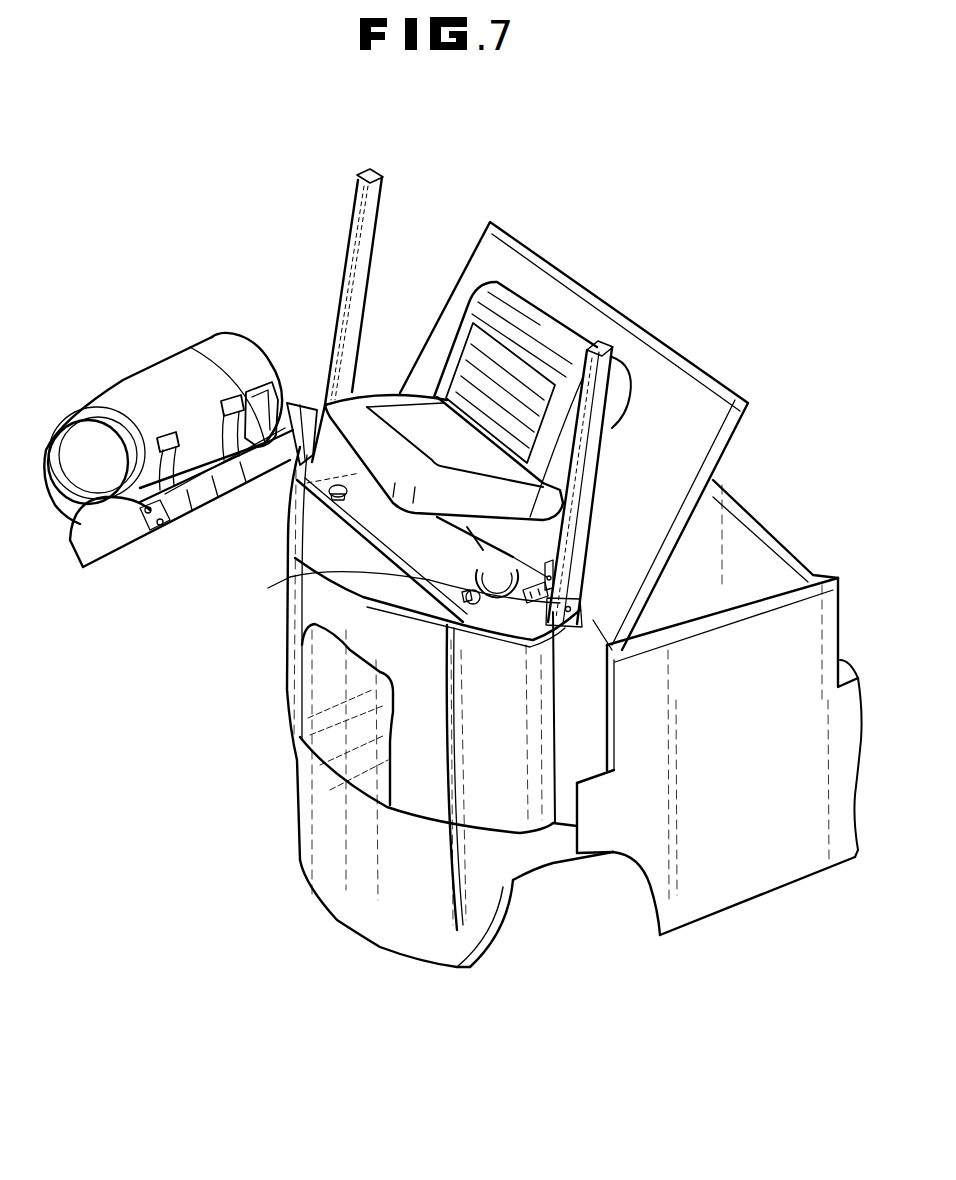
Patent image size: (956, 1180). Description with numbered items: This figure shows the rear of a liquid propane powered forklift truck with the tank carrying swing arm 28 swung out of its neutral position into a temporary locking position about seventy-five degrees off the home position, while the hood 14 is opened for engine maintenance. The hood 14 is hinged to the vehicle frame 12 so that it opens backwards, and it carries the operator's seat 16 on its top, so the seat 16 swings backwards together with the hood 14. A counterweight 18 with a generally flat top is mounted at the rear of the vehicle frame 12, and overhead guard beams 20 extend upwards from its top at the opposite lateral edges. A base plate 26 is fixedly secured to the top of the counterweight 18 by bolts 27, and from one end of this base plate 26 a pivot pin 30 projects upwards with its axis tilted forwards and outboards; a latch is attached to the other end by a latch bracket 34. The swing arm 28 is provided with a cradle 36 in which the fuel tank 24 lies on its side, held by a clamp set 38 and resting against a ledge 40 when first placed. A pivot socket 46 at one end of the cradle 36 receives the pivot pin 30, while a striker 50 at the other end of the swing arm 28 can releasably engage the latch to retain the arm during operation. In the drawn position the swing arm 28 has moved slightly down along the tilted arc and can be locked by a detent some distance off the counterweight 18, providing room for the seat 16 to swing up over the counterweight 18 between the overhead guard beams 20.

The vehicle frame 12 is at (722, 888).
The hood 14 is at (585, 298).
The operator's seat 16 is at (497, 287).
The counterweight 18 is at (292, 676).
The overhead guard beams 20 is at (357, 203).
The fuel tank 24 is at (157, 373).
The base plate 26 is at (520, 613).
The bolts 27 is at (338, 500).
The tank carrying swing arm 28 is at (167, 534).
The pivot pin 30 is at (323, 453).
The latch bracket 34 is at (560, 603).
The cradle 36 is at (225, 488).
The clamp set 38 is at (170, 433).
The ledge 40 is at (103, 547).
The pivot socket 46 is at (293, 402).
The striker 50 is at (170, 527).